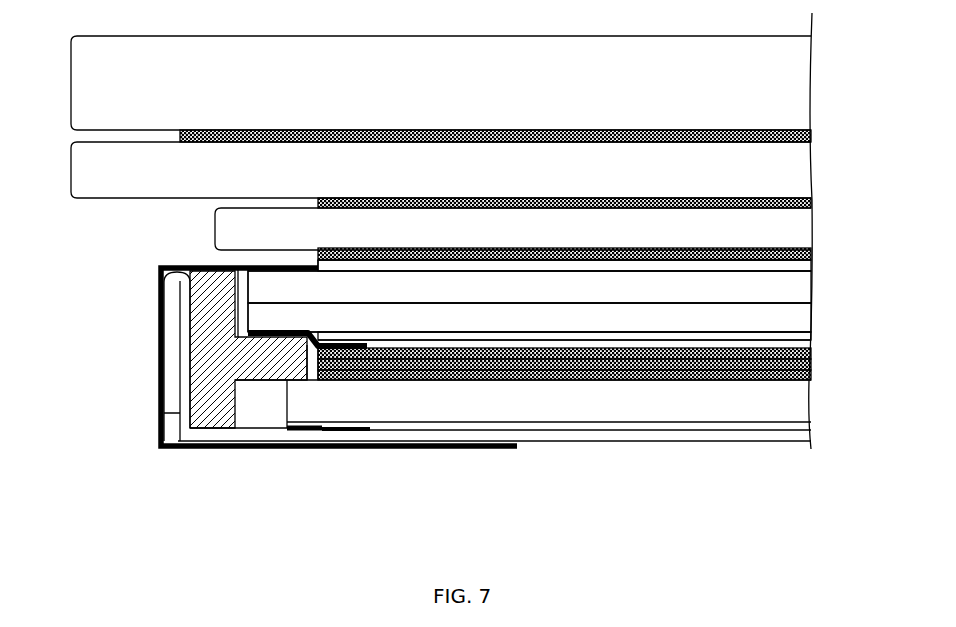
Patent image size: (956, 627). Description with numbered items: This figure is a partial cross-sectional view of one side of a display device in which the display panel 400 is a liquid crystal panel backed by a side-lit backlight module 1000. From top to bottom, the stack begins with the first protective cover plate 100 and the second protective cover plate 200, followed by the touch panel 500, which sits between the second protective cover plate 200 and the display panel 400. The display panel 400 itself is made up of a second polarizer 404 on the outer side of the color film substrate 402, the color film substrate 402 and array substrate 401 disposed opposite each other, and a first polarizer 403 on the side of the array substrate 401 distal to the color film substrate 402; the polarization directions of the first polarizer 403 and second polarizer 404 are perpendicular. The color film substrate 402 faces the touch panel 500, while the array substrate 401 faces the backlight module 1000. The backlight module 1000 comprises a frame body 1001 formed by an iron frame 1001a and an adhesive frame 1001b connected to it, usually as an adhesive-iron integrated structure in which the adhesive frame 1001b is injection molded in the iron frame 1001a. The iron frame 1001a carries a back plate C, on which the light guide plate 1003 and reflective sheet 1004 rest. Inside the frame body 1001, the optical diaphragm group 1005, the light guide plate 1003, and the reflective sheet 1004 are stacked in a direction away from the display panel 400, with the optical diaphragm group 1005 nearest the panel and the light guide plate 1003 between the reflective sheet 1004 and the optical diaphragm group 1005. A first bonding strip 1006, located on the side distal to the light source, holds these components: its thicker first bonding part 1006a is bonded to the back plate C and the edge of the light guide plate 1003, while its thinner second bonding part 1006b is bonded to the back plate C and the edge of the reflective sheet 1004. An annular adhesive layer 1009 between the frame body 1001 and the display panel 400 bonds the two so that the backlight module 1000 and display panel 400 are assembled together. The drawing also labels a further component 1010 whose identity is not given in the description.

The first protective cover plate 100 is at (78, 89).
The second protective cover plate 200 is at (78, 167).
The touch panel 500 is at (218, 226).
The display panel 400 is at (872, 263).
The array substrate 401 is at (802, 291).
The color film substrate 402 is at (802, 317).
The first polarizer 403 is at (802, 335).
The second polarizer 404 is at (802, 265).
The backlight module 1000 is at (872, 353).
The frame body 1001 is at (88, 297).
The iron frame 1001a is at (179, 342).
The adhesive frame 1001b is at (195, 303).
The light guide plate 1003 is at (790, 402).
The reflective sheet 1004 is at (790, 423).
The optical diaphragm group 1005 is at (818, 350).
The first bonding strip 1006 is at (363, 477).
The first bonding part 1006a is at (313, 439).
The second bonding part 1006b is at (362, 439).
The annular adhesive layer 1009 is at (280, 323).
The outer housing 1010 is at (212, 456).
The back plate C is at (547, 433).